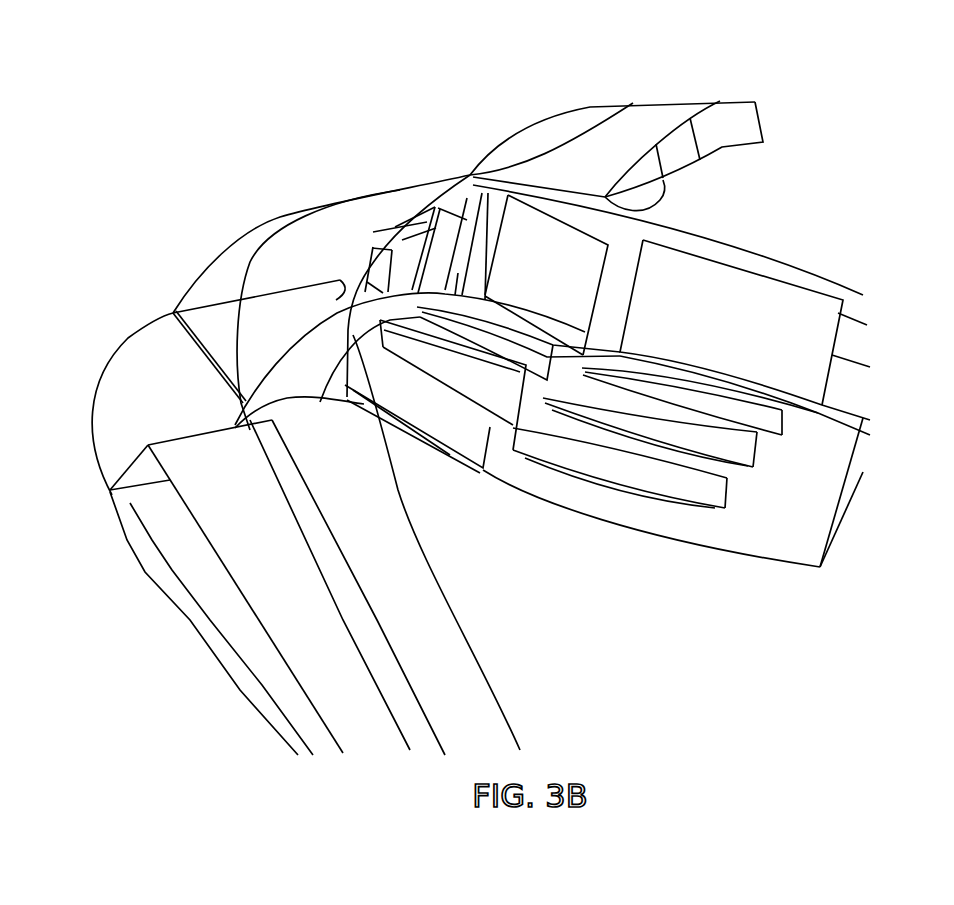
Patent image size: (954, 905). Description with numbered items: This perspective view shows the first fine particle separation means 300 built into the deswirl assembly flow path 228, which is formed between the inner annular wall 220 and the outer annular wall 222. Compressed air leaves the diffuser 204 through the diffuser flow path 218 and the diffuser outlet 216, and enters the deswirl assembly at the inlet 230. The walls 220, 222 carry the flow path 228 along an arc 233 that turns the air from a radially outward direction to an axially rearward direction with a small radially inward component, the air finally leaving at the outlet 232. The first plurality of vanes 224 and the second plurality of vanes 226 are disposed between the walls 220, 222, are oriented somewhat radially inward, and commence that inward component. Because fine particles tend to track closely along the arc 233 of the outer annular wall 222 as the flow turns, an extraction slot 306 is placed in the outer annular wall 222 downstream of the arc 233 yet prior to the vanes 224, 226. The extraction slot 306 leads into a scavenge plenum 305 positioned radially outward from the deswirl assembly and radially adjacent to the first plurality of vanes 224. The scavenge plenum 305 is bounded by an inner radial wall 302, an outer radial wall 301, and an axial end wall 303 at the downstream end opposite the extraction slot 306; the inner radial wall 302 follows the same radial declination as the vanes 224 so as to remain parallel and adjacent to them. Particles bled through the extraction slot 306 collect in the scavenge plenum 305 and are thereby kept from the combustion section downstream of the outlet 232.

The first fine particle separation means 300 is at (822, 85).
The outer radial wall 301 is at (621, 109).
The inner radial wall 302 is at (537, 157).
The axial end wall 303 is at (763, 106).
The scavenge plenum 305 is at (573, 175).
The extraction slot 306 is at (414, 205).
The diffuser 204 is at (233, 683).
The diffuser outlet 216 is at (150, 487).
The diffuser flow path 218 is at (168, 559).
The inner annular wall 220 is at (298, 400).
The outer annular wall 222 is at (312, 207).
The first plurality of vanes 224 is at (528, 284).
The second plurality of vanes 226 is at (693, 329).
The flow path 228 is at (258, 334).
The inlet 230 is at (205, 431).
The outlet 232 is at (837, 528).
The arc 233 is at (253, 227).